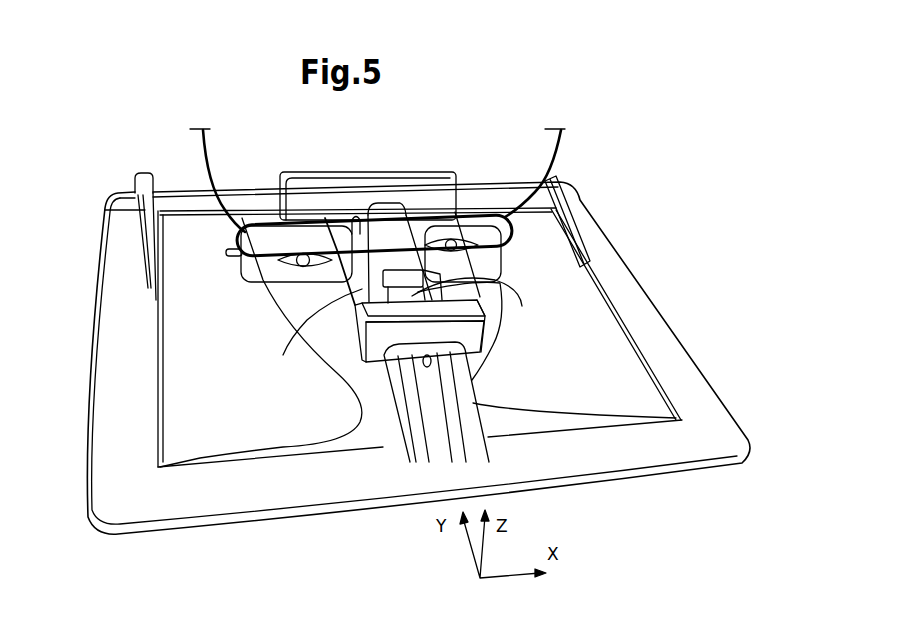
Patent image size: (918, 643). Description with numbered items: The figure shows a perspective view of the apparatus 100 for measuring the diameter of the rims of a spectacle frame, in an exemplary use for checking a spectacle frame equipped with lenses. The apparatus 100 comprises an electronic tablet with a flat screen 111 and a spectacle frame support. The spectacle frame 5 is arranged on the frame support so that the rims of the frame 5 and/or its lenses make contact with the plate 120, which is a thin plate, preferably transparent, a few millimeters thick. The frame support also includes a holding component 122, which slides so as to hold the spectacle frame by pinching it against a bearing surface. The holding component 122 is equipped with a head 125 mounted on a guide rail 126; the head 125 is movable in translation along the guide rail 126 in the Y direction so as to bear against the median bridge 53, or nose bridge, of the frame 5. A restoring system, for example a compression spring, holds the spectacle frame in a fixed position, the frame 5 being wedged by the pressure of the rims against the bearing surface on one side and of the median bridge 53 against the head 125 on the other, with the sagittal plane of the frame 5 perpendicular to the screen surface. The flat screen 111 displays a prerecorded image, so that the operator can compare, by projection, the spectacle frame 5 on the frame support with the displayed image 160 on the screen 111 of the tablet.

The apparatus 100 is at (94, 338).
The flat screen 111 is at (232, 425).
The spectacle frame 5 is at (208, 158).
The displayed image 160 is at (242, 266).
The median bridge 53 is at (352, 218).
The plate 120 is at (296, 341).
The head 125 is at (388, 202).
The guide rail 126 is at (496, 284).
The holding component 122 is at (482, 322).